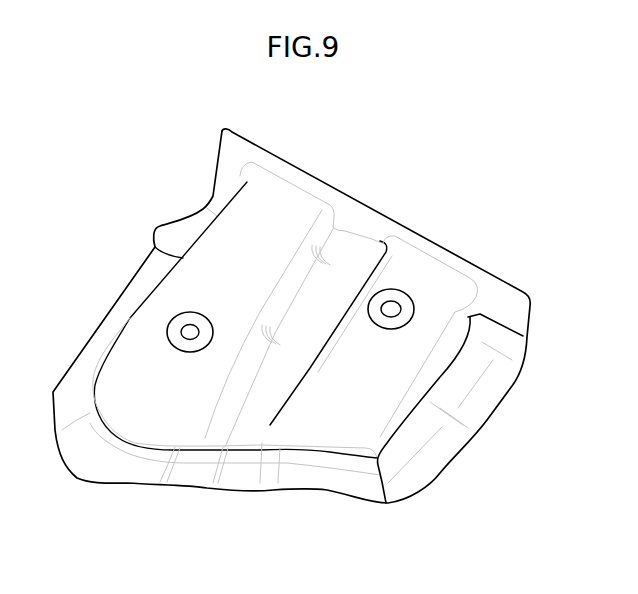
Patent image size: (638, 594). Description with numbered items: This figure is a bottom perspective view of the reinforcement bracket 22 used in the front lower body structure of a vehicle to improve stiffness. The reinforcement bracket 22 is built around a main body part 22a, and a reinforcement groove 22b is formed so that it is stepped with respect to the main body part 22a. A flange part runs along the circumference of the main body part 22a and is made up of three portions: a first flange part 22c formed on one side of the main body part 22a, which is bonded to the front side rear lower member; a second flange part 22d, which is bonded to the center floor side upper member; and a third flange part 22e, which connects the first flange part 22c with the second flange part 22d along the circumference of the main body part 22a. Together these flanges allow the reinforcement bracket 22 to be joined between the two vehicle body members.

The reinforcement bracket 22 is at (418, 210).
The main body part 22a is at (173, 393).
The reinforcement groove 22b is at (255, 400).
The first flange part 22c is at (363, 215).
The second flange part 22d is at (332, 480).
The third flange part 22e is at (137, 293).